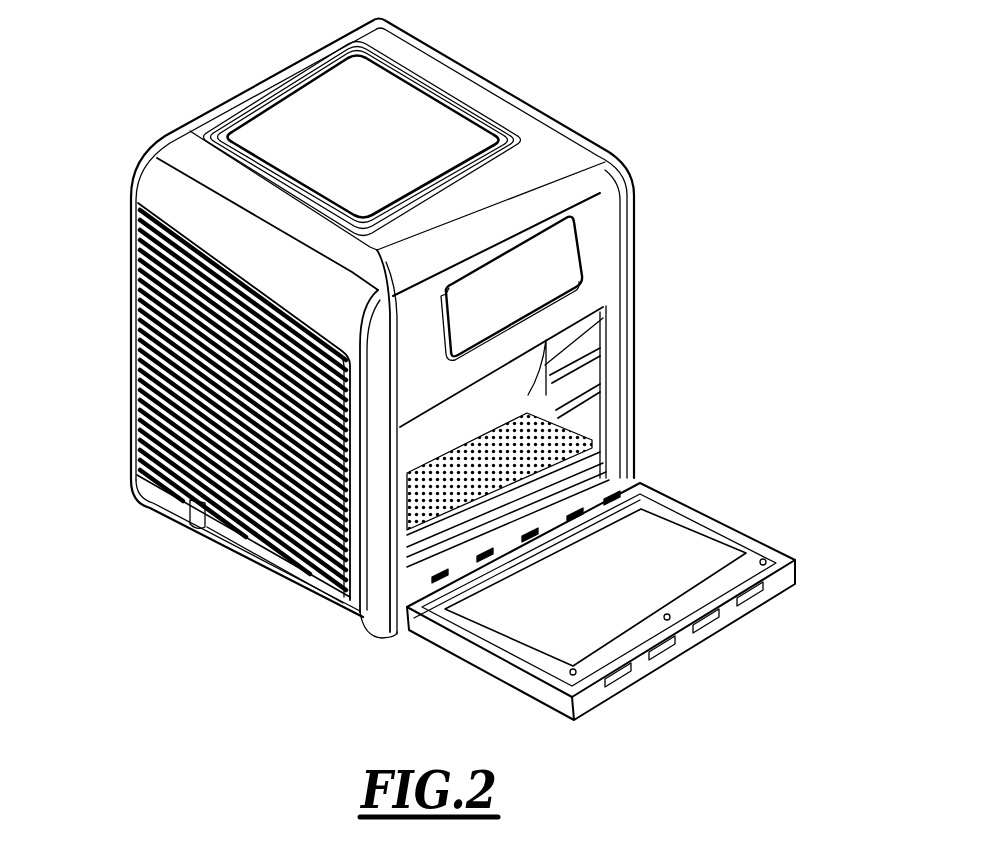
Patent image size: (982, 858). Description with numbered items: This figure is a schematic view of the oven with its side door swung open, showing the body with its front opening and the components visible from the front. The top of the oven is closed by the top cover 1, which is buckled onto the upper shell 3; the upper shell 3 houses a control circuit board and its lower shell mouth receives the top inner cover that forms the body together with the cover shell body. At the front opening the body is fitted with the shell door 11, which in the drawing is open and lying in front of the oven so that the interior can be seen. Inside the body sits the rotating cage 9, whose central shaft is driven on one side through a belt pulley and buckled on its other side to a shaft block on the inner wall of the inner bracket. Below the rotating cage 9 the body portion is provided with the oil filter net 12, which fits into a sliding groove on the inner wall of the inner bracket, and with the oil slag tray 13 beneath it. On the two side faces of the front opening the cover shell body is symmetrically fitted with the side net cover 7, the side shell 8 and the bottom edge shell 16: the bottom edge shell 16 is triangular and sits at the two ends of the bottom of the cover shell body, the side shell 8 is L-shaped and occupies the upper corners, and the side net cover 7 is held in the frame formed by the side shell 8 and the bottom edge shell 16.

The top cover 1 is at (406, 98).
The upper shell 3 is at (580, 144).
The side net cover 7 is at (137, 333).
The side shell 8 is at (153, 185).
The rotating cage 9 is at (597, 350).
The shell door 11 is at (773, 542).
The oil filter net 12 is at (600, 407).
The oil slag tray 13 is at (605, 444).
The bottom edge shell 16 is at (160, 478).